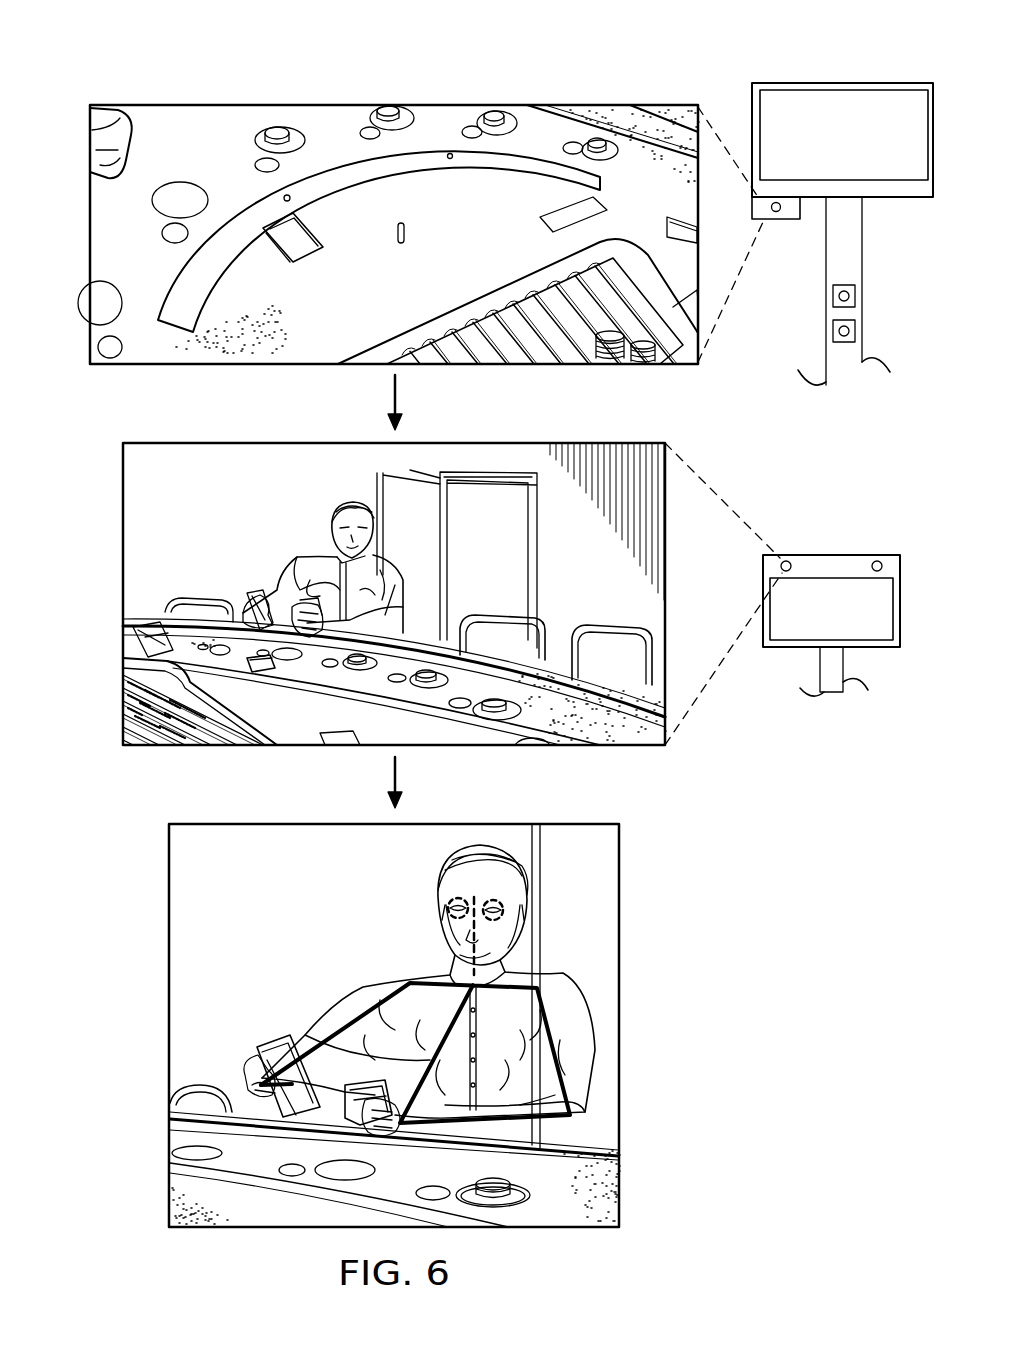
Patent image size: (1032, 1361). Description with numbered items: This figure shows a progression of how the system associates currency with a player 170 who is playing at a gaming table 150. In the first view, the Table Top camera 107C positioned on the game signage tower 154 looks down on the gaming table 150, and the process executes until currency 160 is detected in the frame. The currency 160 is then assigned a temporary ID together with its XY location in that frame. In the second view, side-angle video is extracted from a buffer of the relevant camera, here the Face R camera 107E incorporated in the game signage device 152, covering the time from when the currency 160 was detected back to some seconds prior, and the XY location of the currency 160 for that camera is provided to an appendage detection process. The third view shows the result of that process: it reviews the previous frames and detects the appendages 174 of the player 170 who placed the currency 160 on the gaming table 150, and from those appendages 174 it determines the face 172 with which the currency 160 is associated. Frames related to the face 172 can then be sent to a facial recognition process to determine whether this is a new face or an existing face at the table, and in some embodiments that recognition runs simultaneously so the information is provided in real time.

The gaming table 150 is at (102, 300).
The game signage device 152 is at (864, 545).
The game signage tower 154 is at (878, 72).
The Table Top camera 107C is at (786, 218).
The Face R camera 107E is at (787, 562).
The currency 160 is at (318, 250).
The player 170 is at (300, 580).
The face 172 is at (477, 918).
The appendages 174 is at (307, 1043).